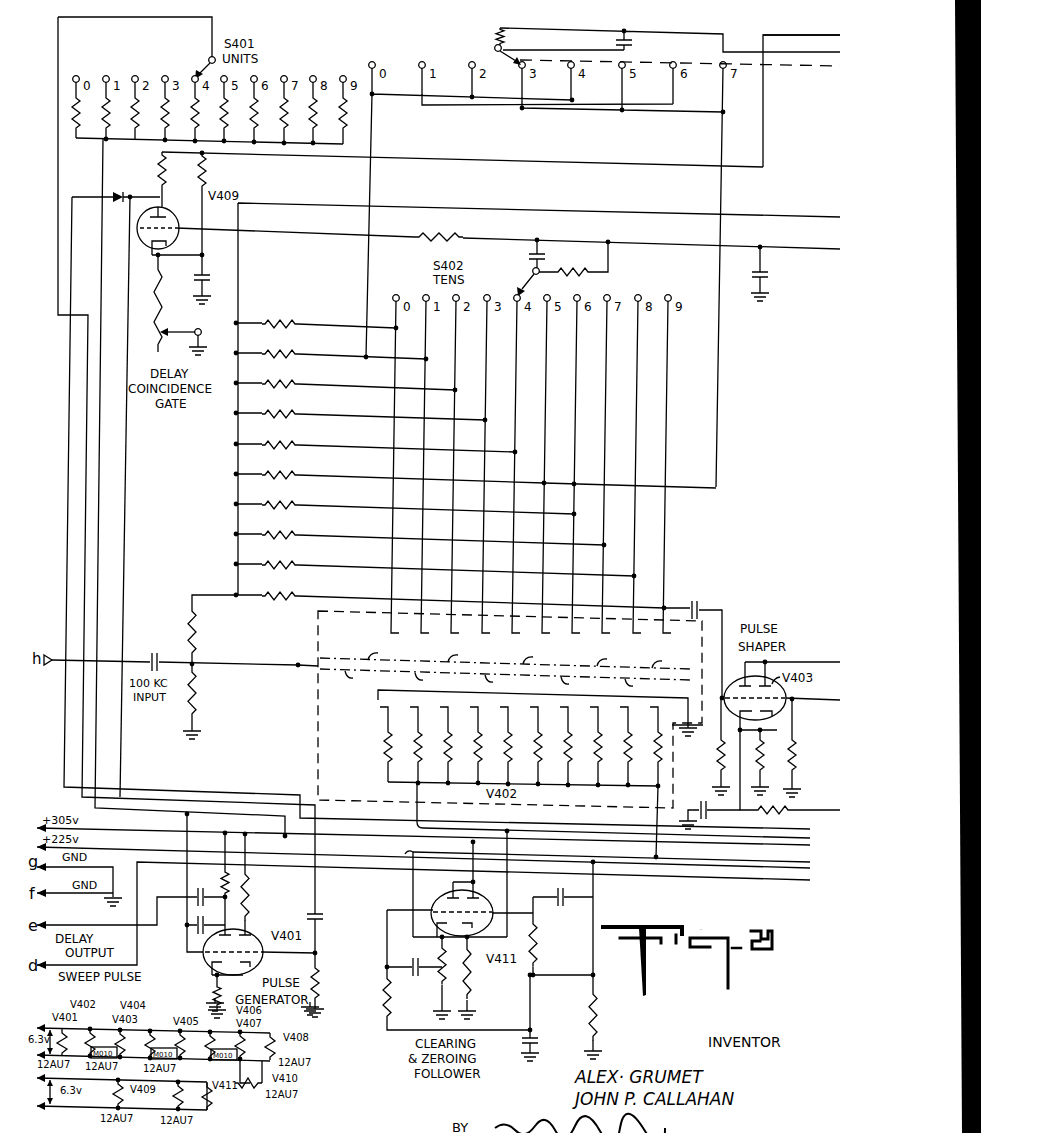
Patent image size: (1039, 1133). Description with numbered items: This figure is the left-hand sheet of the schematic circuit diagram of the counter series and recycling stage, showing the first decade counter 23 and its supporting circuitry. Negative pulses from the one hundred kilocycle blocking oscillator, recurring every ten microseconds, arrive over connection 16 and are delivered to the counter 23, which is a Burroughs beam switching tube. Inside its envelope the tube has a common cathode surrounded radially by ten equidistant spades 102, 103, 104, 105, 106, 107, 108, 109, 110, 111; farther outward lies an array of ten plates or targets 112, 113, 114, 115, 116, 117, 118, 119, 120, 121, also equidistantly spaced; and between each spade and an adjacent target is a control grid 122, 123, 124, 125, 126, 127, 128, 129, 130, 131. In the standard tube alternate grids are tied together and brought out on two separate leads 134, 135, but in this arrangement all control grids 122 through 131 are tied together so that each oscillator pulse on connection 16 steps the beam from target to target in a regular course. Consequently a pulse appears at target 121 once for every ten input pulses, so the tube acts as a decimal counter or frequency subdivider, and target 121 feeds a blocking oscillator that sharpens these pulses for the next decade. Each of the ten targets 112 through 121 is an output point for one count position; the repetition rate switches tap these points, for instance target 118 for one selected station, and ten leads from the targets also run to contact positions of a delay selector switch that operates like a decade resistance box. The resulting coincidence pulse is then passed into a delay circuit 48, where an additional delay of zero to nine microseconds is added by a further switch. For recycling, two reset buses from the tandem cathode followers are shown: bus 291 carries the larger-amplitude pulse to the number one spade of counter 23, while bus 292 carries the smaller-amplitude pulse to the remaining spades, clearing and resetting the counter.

The connection 16 is at (151, 660).
The first decade counter 23 is at (322, 611).
The delay circuit 48 is at (155, 142).
The spade 102 is at (378, 744).
The spade 103 is at (408, 745).
The spade 104 is at (438, 745).
The spade 105 is at (468, 745).
The spade 106 is at (498, 745).
The spade 107 is at (528, 745).
The spade 108 is at (558, 746).
The spade 109 is at (588, 746).
The spade 110 is at (618, 746).
The spade 111 is at (648, 746).
The target 112 is at (383, 467).
The target 113 is at (413, 467).
The target 114 is at (443, 467).
The target 115 is at (474, 467).
The target 116 is at (504, 467).
The target 117 is at (534, 467).
The target 118 is at (564, 467).
The target 119 is at (594, 467).
The target 120 is at (625, 467).
The target 121 is at (655, 467).
The control grid 122 is at (359, 680).
The control grid 123 is at (383, 653).
The control grid 124 is at (429, 682).
The control grid 125 is at (463, 655).
The control grid 126 is at (499, 684).
The control grid 127 is at (538, 657).
The control grid 128 is at (575, 686).
The control grid 129 is at (612, 659).
The control grid 130 is at (639, 688).
The control grid 131 is at (667, 661).
The grid lead 134 is at (301, 661).
The grid lead 135 is at (300, 672).
The bus 291 is at (595, 810).
The bus 292 is at (591, 853).